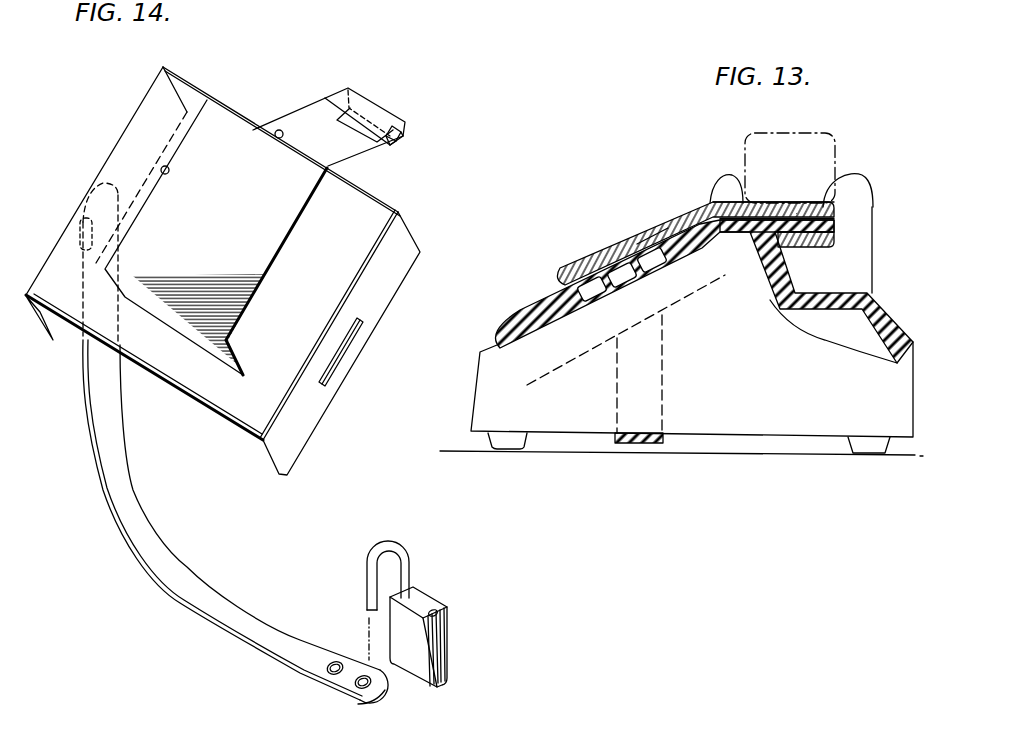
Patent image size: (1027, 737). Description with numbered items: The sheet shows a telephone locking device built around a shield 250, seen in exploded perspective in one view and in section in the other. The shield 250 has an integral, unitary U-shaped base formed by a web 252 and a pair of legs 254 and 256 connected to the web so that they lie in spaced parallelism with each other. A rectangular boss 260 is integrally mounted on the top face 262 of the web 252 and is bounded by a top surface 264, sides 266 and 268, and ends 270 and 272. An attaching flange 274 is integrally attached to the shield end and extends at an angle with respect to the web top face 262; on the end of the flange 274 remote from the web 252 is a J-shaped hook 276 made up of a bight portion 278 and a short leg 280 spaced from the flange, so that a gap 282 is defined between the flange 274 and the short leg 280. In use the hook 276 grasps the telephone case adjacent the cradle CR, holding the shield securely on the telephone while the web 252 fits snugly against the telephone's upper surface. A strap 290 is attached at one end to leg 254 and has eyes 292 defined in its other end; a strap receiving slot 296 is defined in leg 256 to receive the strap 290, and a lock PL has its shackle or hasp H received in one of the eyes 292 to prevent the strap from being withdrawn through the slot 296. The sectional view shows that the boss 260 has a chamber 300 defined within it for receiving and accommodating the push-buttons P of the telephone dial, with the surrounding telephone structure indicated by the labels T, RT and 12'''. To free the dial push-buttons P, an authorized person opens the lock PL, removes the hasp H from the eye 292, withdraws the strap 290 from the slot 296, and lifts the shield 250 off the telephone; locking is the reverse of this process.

In FIG. 14, the shield 250 is at (301, 468).
In FIG. 14, the web 252 is at (232, 400).
In FIG. 14, the leg 254 is at (52, 334).
In FIG. 14, the leg 256 is at (402, 260).
In FIG. 14, the rectangular boss 260 is at (238, 145).
In FIG. 13, the rectangular boss 260 is at (582, 243).
In FIG. 14, the top face 262 is at (381, 213).
In FIG. 14, the top surface 264 is at (252, 146).
In FIG. 14, the side 266 is at (169, 173).
In FIG. 14, the side 268 is at (294, 247).
In FIG. 14, the end 270 is at (275, 137).
In FIG. 14, the end 272 is at (171, 318).
In FIG. 14, the attaching flange 274 is at (328, 112).
In FIG. 13, the attaching flange 274 is at (738, 202).
In FIG. 14, the hook 276 is at (398, 105).
In FIG. 13, the hook 276 is at (851, 210).
In FIG. 14, the bight portion 278 is at (404, 128).
In FIG. 13, the bight portion 278 is at (836, 228).
In FIG. 14, the short leg 280 is at (397, 145).
In FIG. 13, the short leg 280 is at (805, 248).
In FIG. 14, the gap 282 is at (377, 147).
In FIG. 13, the gap 282 is at (803, 222).
In FIG. 14, the strap 290 is at (223, 608).
In FIG. 13, the strap 290 is at (655, 388).
In FIG. 14, the eyes 292 is at (338, 660).
In FIG. 14, the strap receiving slot 296 is at (335, 358).
In FIG. 13, the chamber 300 is at (657, 240).
In FIG. 14, the shackle or hasp H is at (407, 560).
In FIG. 14, the lock PL is at (449, 597).
In FIG. 13, the terminal base T is at (470, 372).
In FIG. 13, the push-buttons P is at (618, 267).
In FIG. 13, the keyboard 12''' is at (705, 291).
In FIG. 13, the cradle CR is at (725, 180).
In FIG. 13, the retainer tab RT is at (797, 155).